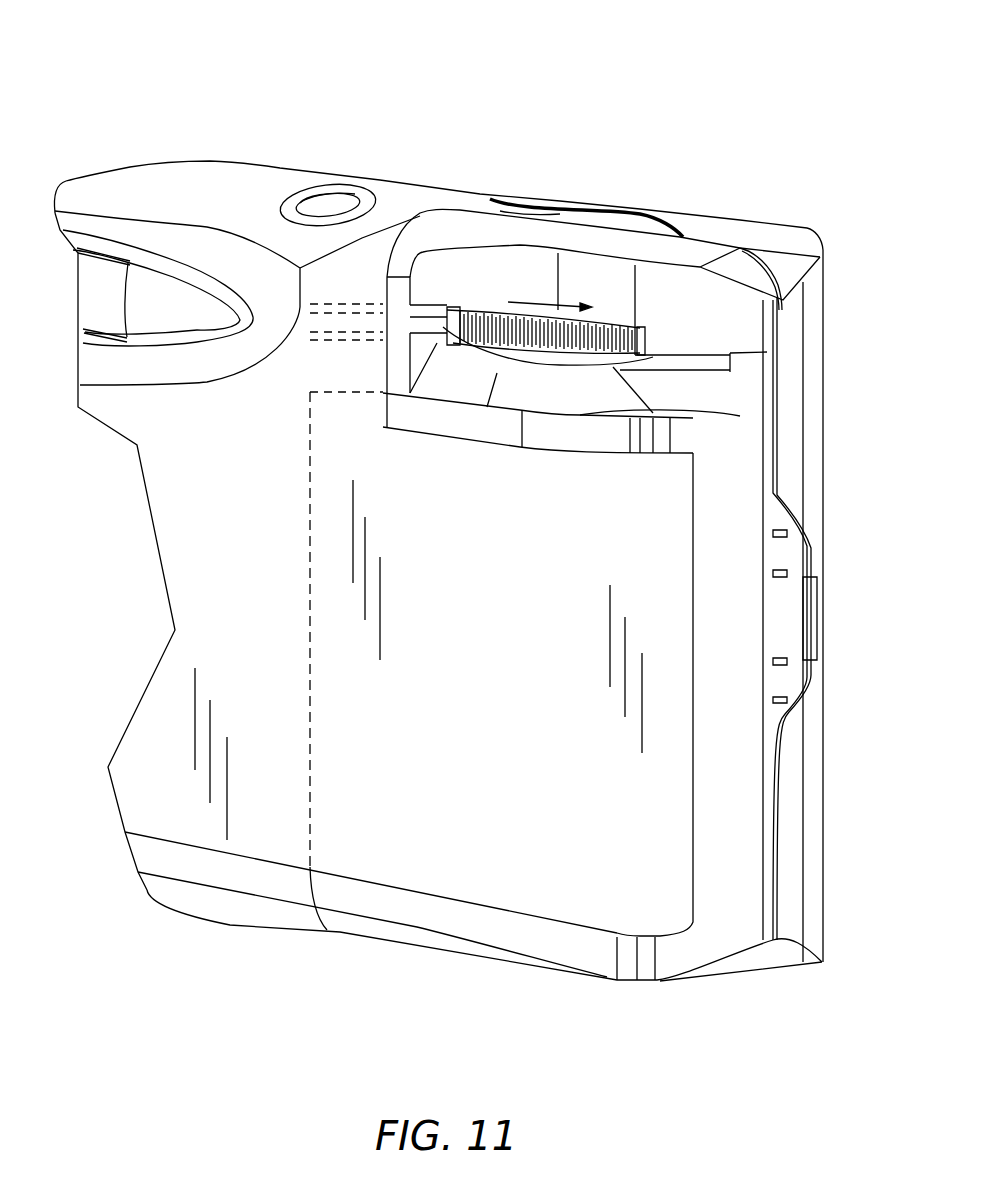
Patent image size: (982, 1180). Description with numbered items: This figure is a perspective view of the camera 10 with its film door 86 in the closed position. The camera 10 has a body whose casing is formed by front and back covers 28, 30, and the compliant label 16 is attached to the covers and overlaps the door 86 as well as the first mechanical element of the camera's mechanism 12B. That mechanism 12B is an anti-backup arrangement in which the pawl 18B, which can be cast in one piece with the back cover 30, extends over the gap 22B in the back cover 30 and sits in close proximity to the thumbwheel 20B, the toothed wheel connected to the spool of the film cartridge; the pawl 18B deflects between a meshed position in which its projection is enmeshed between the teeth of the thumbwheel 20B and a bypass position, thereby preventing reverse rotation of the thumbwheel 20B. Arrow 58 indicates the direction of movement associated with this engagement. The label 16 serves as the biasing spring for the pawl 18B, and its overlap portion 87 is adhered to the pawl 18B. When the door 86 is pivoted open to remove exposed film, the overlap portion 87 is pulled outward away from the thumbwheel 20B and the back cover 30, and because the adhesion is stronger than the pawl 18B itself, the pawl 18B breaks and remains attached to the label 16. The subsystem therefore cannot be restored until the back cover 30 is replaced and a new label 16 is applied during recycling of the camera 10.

The camera 10 is at (426, 80).
The label 16 is at (203, 197).
The mechanism 12B is at (486, 248).
The overlap portion 87 is at (345, 292).
The direction of rotation 58 is at (574, 305).
The gap 22B is at (330, 339).
The thumbwheel 20B is at (650, 345).
The pawl 18B is at (436, 337).
The front cover 28 is at (822, 348).
The back cover 30 is at (137, 850).
The door 86 is at (410, 912).